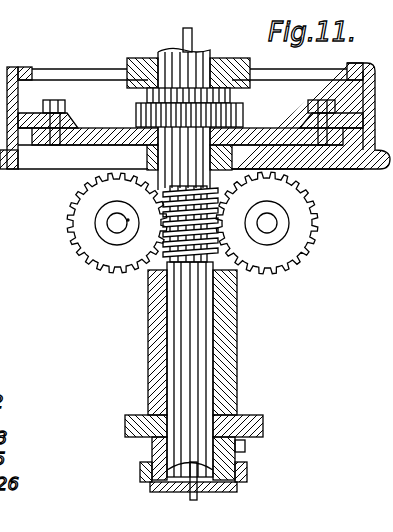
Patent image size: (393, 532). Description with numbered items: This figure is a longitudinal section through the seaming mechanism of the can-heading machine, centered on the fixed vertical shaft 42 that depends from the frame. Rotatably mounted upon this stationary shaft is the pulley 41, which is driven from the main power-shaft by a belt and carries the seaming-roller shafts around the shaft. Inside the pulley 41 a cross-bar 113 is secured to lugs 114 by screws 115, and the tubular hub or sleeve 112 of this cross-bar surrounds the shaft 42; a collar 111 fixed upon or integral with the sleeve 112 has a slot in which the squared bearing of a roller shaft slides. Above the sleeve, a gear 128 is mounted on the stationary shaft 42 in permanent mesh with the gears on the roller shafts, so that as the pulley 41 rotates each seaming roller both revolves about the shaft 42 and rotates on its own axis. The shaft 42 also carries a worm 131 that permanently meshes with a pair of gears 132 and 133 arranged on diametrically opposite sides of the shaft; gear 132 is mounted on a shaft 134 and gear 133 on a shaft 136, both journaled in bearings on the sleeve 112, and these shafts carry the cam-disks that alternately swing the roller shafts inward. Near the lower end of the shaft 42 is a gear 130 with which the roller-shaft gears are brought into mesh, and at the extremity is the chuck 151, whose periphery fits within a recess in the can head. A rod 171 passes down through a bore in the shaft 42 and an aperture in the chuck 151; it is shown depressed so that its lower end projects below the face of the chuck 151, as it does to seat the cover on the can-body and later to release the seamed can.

The pulley 41 is at (5, 76).
The fixed vertical shaft 42 is at (187, 313).
The collar 111 is at (263, 423).
The tubular hub or sleeve 112 is at (237, 340).
The cross-bar 113 is at (190, 148).
The lugs 114 is at (42, 111).
The screws 115 is at (66, 102).
The gear 128 is at (136, 116).
The gear 130 is at (150, 472).
The worm 131 is at (218, 212).
The gear 132 is at (88, 244).
The gear 133 is at (283, 255).
The shaft 134 is at (115, 228).
The shaft 136 is at (272, 223).
The chuck 151 is at (172, 490).
The rod 171 is at (183, 33).